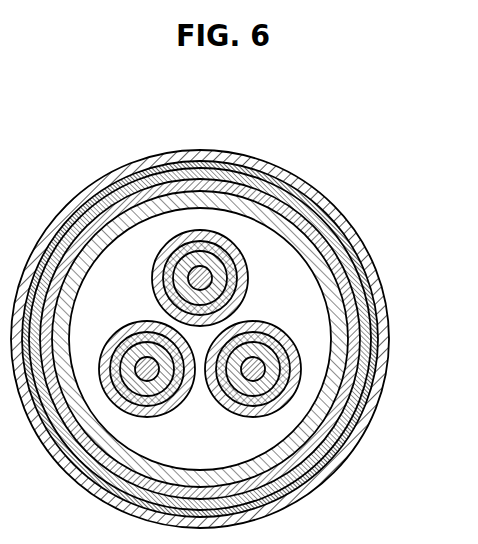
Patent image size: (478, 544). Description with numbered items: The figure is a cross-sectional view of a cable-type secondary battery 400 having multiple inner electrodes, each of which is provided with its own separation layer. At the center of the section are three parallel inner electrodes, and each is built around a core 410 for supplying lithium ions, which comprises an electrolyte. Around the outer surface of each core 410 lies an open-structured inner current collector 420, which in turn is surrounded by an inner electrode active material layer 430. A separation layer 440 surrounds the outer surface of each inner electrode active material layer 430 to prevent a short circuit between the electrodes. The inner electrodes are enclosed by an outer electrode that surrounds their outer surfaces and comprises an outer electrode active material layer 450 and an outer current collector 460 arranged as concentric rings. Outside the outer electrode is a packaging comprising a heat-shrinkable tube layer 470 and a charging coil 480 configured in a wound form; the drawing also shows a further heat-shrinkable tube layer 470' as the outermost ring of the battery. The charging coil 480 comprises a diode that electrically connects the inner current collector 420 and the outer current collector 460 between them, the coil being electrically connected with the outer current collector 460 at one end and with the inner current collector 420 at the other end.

The cable-type secondary battery 400 is at (62, 164).
The core for supplying lithium ions 410 is at (198, 272).
The inner current collector 420 is at (215, 258).
The inner electrode active material layer 430 is at (222, 255).
The separation layer 440 is at (237, 257).
The outer electrode active material layer 450 is at (305, 267).
The outer current collector 460 is at (327, 275).
The heat-shrinkable tube layer 470 is at (235, 339).
The charging coil 480 is at (363, 313).
The heat-shrinkable tube layer 470' is at (229, 339).